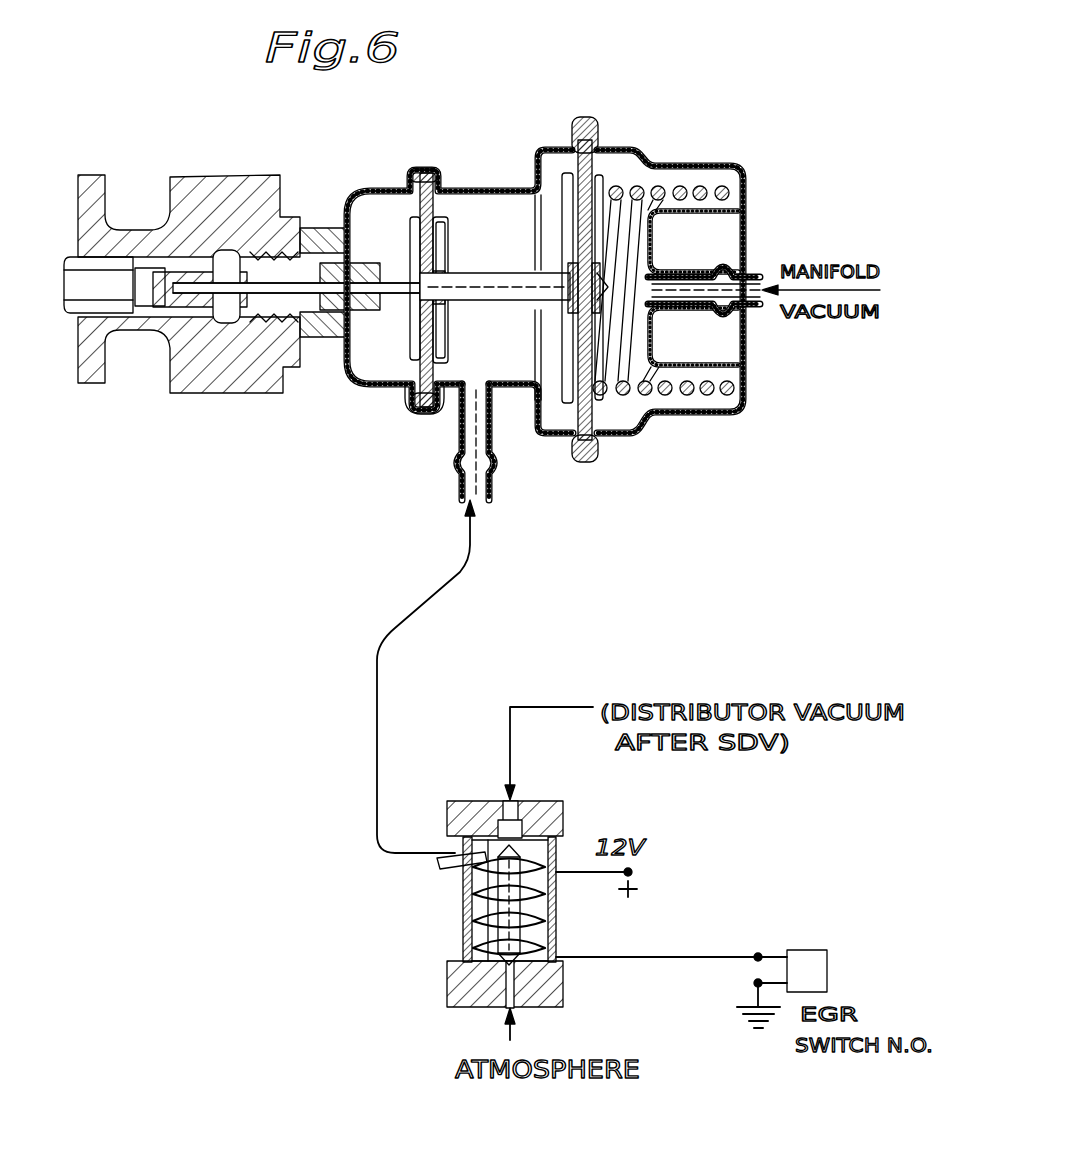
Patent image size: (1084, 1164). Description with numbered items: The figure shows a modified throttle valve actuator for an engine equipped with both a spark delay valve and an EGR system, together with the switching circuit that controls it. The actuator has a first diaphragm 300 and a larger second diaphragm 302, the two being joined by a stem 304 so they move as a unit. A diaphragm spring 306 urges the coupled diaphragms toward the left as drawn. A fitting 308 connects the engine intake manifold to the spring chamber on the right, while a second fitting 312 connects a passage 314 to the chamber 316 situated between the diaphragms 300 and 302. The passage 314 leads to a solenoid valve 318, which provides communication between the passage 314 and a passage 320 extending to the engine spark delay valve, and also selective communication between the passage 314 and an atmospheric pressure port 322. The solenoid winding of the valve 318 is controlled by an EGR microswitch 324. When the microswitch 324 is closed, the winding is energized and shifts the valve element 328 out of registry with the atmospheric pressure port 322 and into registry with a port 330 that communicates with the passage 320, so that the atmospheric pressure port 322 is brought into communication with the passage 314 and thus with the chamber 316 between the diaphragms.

The first diaphragm 300 is at (392, 205).
The second diaphragm 302 is at (528, 163).
The stem 304 is at (453, 273).
The diaphragm spring 306 is at (660, 193).
The fitting 308 is at (752, 272).
The fitting 312 is at (463, 483).
The passage 314 is at (377, 777).
The chamber 316 is at (443, 410).
The solenoid valve 318 is at (557, 933).
The passage 320 is at (567, 662).
The atmospheric pressure port 322 is at (500, 990).
The EGR microswitch 324 is at (803, 950).
The valve element 328 is at (497, 903).
The port 330 is at (457, 840).